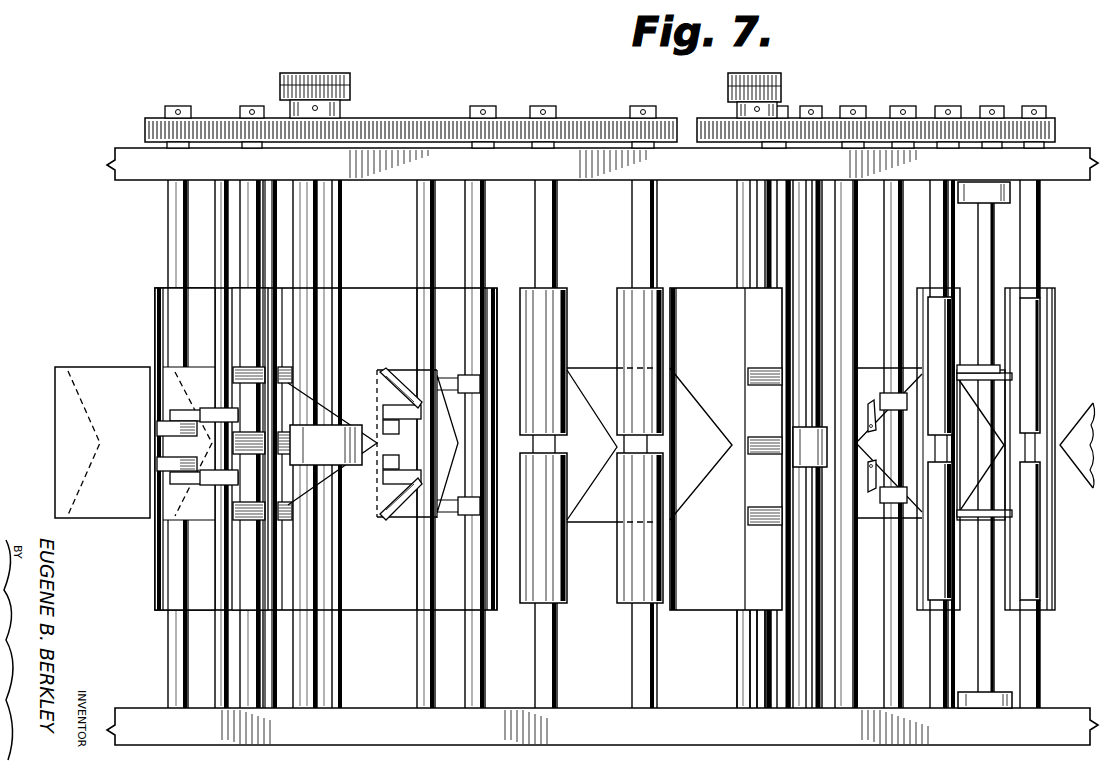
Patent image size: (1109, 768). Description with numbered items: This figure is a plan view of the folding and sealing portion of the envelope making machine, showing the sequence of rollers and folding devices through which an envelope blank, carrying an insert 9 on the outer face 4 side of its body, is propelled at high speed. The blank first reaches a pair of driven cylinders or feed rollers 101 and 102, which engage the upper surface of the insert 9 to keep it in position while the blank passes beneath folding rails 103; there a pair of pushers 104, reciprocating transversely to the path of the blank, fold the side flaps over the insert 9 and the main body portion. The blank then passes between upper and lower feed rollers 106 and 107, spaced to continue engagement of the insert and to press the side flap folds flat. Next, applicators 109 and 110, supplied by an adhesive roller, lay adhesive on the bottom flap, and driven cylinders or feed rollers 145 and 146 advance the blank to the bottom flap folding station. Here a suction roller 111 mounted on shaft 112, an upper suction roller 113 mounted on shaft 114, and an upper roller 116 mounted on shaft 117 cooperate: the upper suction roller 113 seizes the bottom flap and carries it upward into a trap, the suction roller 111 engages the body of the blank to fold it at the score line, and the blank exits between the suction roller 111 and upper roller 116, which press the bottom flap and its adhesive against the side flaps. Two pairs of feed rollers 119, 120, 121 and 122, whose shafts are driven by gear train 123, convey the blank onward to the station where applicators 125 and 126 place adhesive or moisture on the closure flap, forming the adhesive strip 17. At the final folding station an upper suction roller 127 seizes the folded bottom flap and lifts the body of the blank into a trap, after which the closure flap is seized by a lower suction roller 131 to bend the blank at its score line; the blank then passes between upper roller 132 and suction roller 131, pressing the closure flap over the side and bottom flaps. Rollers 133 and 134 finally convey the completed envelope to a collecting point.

The outer face 4 is at (112, 372).
The insert 9 is at (357, 490).
The adhesive strip 17 is at (396, 512).
The driven cylinder 101 is at (1030, 341).
The driven cylinder 102 is at (1042, 604).
The folding rails 103 is at (996, 518).
The pushers 104 is at (976, 381).
The upper feed roller 106 is at (962, 472).
The lower feed roller 107 is at (907, 606).
The applicator 109 is at (876, 388).
The applicator 110 is at (878, 508).
The suction roller 111 is at (710, 290).
The shaft 112 is at (740, 660).
The upper suction roller 113 is at (800, 455).
The shaft 114 is at (812, 247).
The upper roller 116 is at (755, 418).
The shaft 117 is at (757, 626).
The feed roller 119 is at (626, 347).
The feed roller 120 is at (620, 604).
The feed roller 121 is at (562, 308).
The feed roller 122 is at (526, 604).
The gear train 123 is at (571, 118).
The applicator 125 is at (456, 382).
The applicator 126 is at (455, 506).
The upper suction roller 127 is at (343, 428).
The lower suction roller 131 is at (391, 292).
The upper roller 132 is at (233, 290).
The roller 133 is at (163, 458).
The roller 134 is at (158, 549).
The driven cylinder 145 is at (850, 308).
The driven cylinder 146 is at (848, 604).